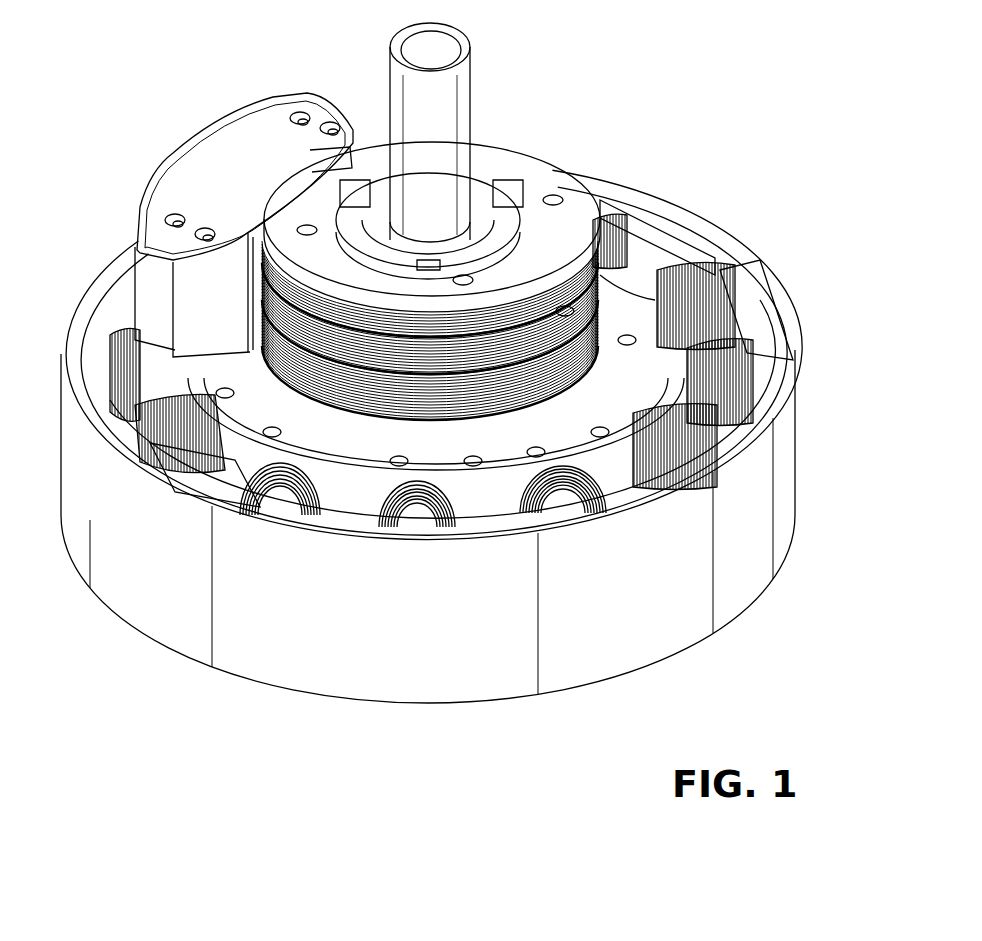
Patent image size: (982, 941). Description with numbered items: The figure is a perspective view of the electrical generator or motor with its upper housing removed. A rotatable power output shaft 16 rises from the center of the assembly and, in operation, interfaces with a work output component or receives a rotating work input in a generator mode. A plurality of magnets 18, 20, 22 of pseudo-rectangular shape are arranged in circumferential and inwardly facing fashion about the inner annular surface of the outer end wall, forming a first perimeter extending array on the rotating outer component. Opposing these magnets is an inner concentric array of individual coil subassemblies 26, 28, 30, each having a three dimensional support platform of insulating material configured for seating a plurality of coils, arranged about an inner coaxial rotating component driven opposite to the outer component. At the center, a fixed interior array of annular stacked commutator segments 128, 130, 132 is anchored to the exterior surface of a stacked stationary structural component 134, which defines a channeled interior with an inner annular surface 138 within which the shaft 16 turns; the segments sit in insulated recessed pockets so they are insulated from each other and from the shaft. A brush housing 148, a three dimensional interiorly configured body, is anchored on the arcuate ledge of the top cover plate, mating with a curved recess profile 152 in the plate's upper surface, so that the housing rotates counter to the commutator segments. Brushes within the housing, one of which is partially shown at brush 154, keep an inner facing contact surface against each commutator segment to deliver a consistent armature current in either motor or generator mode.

The rotatable power output shaft 16 is at (403, 100).
The magnet 18 is at (765, 397).
The magnet 20 is at (745, 285).
The magnet 22 is at (642, 208).
The coil subassembly 26 is at (282, 503).
The coil subassembly 28 is at (405, 521).
The coil subassembly 30 is at (565, 497).
The commutator segment 128 is at (407, 343).
The commutator segment 130 is at (480, 377).
The commutator segment 132 is at (553, 377).
The stacked structural component 134 is at (488, 155).
The inner annular surface 138 is at (488, 188).
The brush housing 148 is at (207, 150).
The curved recess profile 152 is at (625, 285).
The brush 154 is at (260, 298).